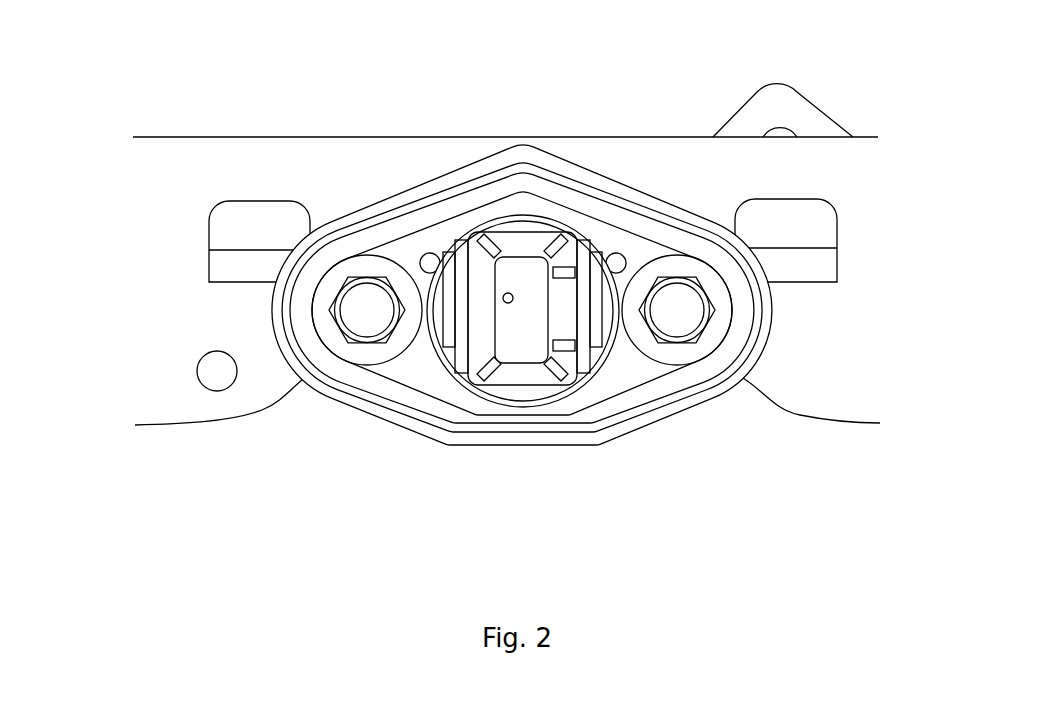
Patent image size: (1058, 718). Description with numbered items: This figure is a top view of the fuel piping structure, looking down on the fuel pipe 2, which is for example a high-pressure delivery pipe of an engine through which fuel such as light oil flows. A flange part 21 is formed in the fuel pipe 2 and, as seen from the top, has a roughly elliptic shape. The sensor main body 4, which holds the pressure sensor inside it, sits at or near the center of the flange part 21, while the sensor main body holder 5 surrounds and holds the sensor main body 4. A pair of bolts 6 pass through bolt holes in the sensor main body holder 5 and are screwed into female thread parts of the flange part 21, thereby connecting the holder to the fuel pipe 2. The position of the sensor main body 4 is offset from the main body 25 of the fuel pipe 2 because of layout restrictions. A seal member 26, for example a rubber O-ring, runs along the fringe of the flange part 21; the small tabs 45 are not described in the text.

The fuel pipe 2 is at (695, 155).
The sensor main body 4 is at (521, 256).
The sensor main body holder 5 is at (428, 373).
The bolt 6 is at (365, 318).
The flange part 21 is at (394, 418).
The main body 25 is at (254, 225).
The seal member 26 is at (588, 427).
The engagement tab 45 is at (426, 256).